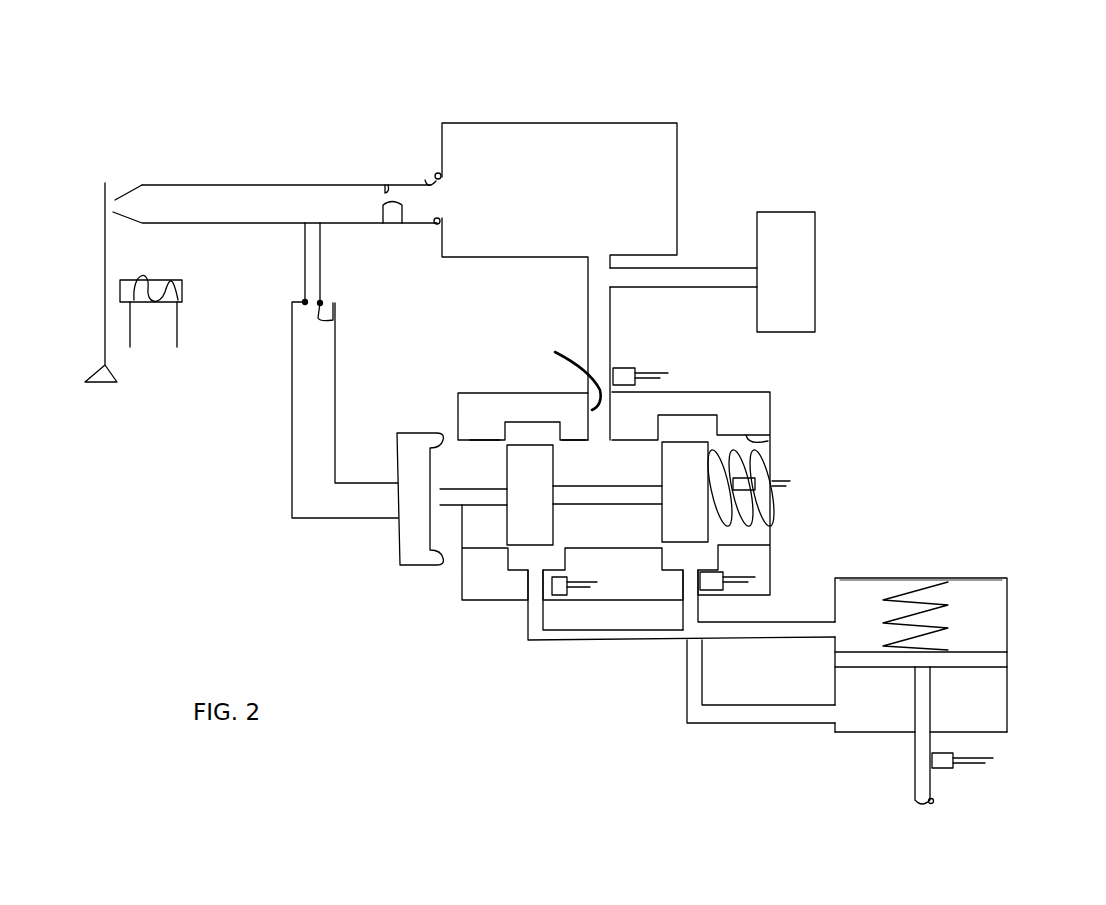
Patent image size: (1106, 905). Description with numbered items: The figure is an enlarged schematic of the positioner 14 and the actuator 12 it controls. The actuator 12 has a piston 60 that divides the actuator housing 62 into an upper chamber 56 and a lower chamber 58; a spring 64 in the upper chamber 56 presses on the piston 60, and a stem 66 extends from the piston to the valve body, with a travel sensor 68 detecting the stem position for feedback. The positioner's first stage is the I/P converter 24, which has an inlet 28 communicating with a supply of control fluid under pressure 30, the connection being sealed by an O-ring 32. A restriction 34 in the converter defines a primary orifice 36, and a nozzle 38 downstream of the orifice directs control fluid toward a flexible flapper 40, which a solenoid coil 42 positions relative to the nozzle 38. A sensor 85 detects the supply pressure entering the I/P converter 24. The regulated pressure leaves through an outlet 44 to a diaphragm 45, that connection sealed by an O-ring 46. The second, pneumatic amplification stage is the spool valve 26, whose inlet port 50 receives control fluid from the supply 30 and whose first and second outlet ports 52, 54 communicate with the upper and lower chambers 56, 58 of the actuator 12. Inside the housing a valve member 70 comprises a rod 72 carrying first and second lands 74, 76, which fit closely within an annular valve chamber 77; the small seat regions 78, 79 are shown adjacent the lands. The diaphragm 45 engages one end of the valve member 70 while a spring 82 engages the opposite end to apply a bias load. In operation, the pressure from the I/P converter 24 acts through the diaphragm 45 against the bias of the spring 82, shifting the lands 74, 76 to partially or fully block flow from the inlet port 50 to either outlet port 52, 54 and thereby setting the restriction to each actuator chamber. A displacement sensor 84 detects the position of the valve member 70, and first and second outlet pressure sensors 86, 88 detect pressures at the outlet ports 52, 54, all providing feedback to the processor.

The actuator 12 is at (858, 742).
The positioner 14 is at (727, 124).
The I/P converter 24 is at (276, 157).
The spool valve 26 is at (647, 473).
The inlet 28 is at (428, 185).
The control fluid supply 30 is at (817, 256).
The O-ring 32 is at (436, 176).
The restriction 34 is at (393, 177).
The primary orifice 36 is at (398, 215).
The nozzle 38 is at (130, 187).
The flapper 40 is at (105, 237).
The solenoid coil 42 is at (177, 275).
The outlet 44 is at (305, 300).
The diaphragm 45 is at (428, 535).
The O-ring 46 is at (335, 313).
The inlet port 50 is at (556, 353).
The first outlet port 52 is at (528, 603).
The second outlet port 54 is at (685, 597).
The upper chamber 56 is at (980, 598).
The lower chamber 58 is at (884, 716).
The piston 60 is at (983, 658).
The actuator housing 62 is at (1008, 592).
The spring 64 is at (927, 577).
The stem 66 is at (933, 795).
The travel sensor 68 is at (943, 773).
The valve member 70 is at (576, 425).
The rod 72 is at (610, 493).
The first land 74 is at (548, 518).
The second land 76 is at (670, 513).
The annular valve chamber 77 is at (482, 442).
The second seat 78 is at (575, 442).
The third seat 79 is at (772, 440).
The spring 82 is at (772, 516).
The displacement sensor 84 is at (757, 481).
The sensor 85 is at (620, 367).
The first outlet pressure sensor 86 is at (555, 595).
The second outlet pressure sensor 88 is at (712, 578).